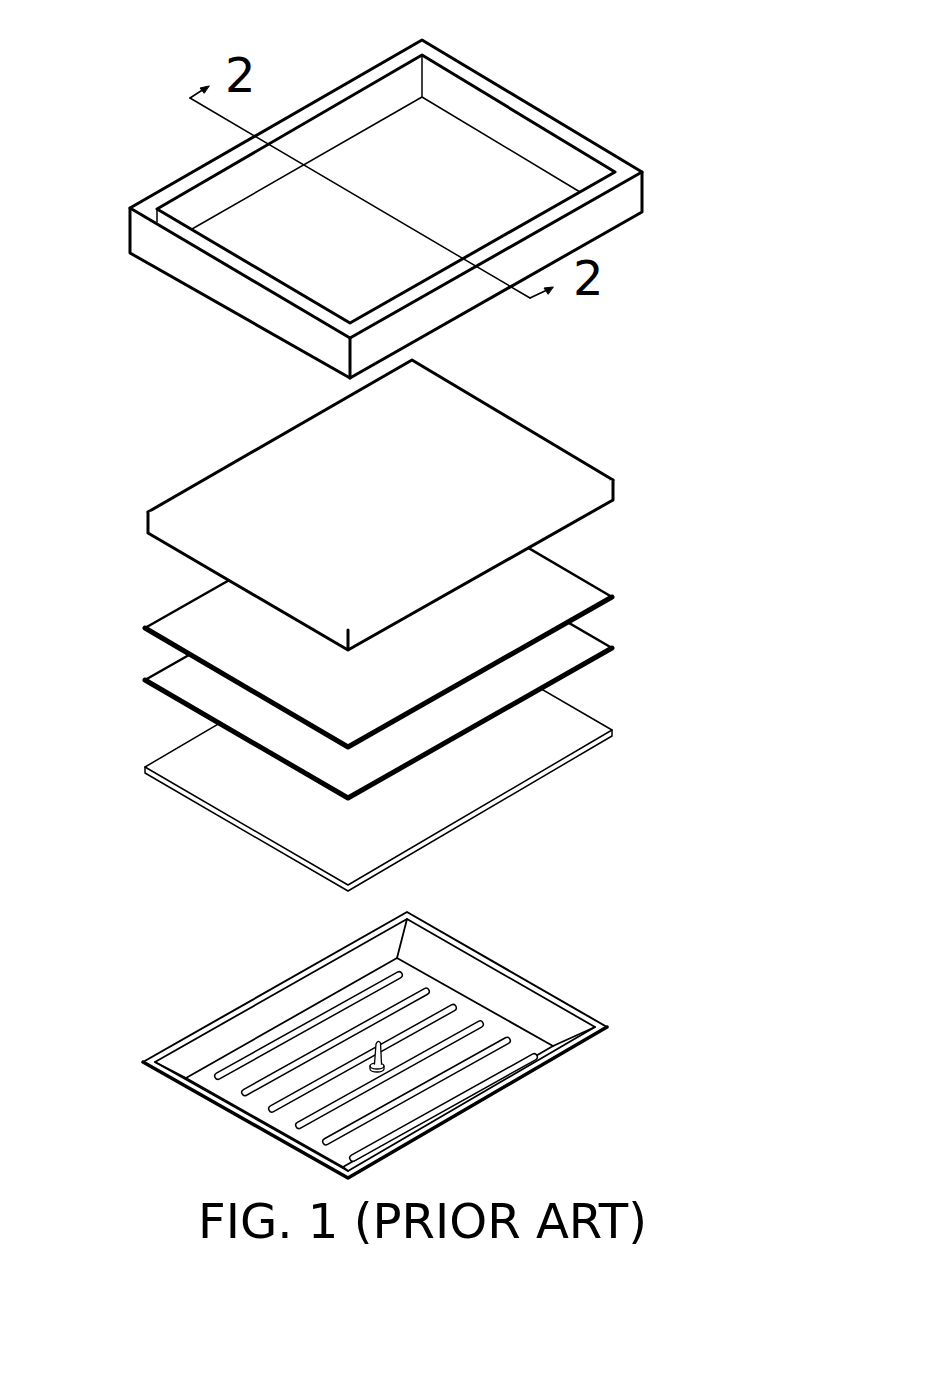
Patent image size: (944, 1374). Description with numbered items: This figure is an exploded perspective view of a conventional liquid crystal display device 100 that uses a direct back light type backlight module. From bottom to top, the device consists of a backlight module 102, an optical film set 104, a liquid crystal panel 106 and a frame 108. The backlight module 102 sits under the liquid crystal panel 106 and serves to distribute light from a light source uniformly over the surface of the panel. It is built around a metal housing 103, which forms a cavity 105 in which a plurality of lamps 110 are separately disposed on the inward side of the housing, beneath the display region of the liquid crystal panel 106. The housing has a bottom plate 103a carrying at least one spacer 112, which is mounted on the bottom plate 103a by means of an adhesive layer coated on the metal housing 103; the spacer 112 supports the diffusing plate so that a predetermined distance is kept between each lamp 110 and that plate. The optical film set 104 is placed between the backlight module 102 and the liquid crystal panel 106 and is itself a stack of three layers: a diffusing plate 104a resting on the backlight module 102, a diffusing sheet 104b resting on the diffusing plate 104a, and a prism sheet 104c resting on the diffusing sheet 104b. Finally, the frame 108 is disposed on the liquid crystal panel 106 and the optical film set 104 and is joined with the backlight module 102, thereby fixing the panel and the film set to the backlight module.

The liquid crystal display device 100 is at (107, 70).
The backlight module 102 is at (198, 1028).
The metal housing 103 is at (268, 1008).
The bottom plate 103a is at (418, 1105).
The optical film set 104 is at (468, 684).
The diffusing plate 104a is at (577, 725).
The diffusing sheet 104b is at (587, 645).
The prism sheet 104c is at (565, 585).
The cavity 105 is at (333, 1000).
The liquid crystal panel 106 is at (152, 523).
The frame 108 is at (137, 237).
The lamp 110 is at (495, 1048).
The spacer 112 is at (388, 1050).